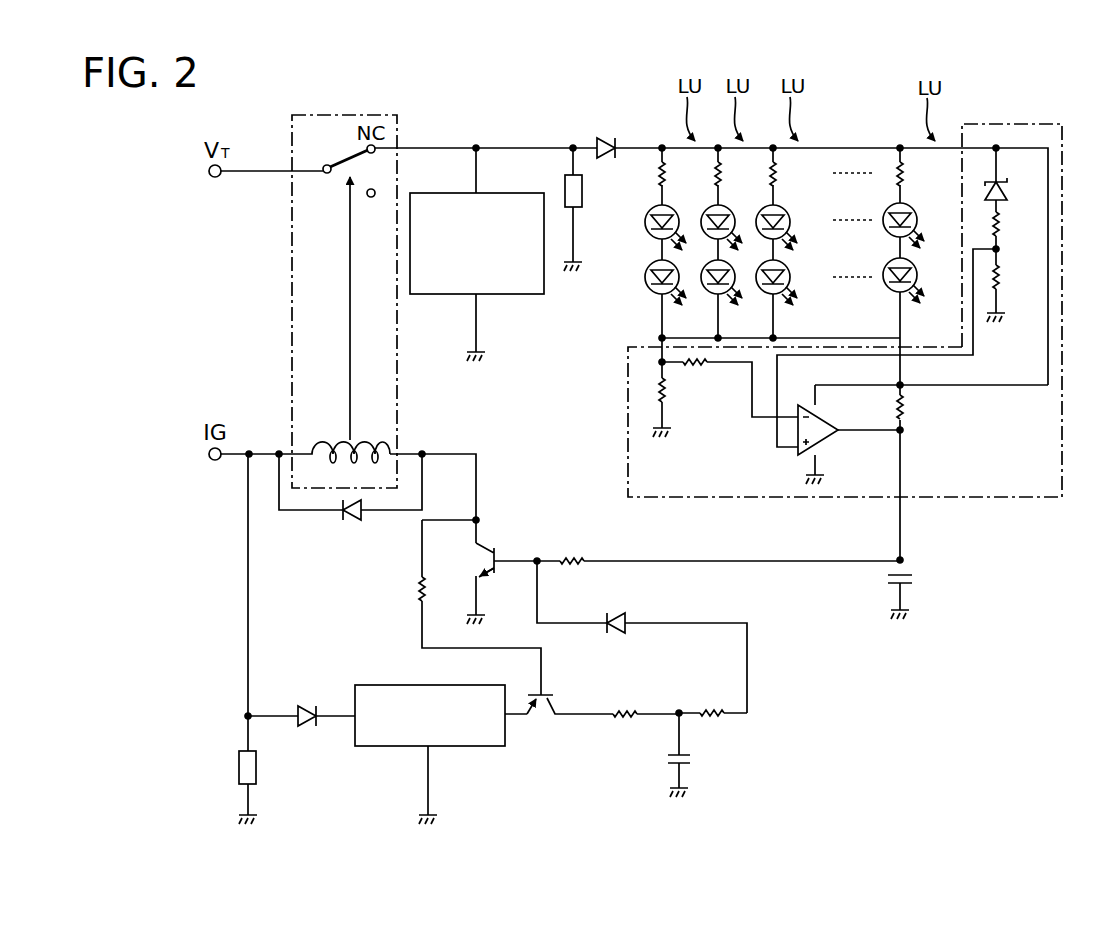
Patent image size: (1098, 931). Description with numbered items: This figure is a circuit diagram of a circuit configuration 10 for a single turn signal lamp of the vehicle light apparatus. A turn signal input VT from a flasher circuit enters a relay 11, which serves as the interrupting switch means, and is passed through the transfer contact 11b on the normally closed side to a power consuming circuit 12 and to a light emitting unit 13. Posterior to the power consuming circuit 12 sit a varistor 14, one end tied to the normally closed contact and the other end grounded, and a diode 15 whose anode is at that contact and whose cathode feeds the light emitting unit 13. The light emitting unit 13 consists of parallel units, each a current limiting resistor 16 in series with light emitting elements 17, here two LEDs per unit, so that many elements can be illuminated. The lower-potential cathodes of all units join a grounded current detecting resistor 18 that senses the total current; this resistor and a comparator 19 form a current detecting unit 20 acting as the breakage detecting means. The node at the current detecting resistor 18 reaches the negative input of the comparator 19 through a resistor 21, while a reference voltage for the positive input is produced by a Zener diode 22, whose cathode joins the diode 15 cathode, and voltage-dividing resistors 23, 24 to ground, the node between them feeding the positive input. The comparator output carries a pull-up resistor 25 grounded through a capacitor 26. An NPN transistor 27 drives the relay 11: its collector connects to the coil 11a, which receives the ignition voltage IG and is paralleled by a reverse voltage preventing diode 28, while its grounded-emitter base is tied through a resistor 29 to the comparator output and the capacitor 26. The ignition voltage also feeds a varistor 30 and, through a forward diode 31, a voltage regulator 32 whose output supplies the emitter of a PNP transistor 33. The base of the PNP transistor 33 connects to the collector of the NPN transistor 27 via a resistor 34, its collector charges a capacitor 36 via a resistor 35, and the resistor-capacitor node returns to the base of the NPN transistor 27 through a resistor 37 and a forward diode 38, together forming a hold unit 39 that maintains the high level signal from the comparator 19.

The circuit configuration 10 is at (845, 80).
The relay 11 is at (330, 113).
The coil 11a is at (330, 440).
The transfer contact 11b is at (335, 176).
The power consuming circuit 12 is at (546, 294).
The light emitting unit 13 is at (882, 130).
The varistor 14 is at (583, 207).
The diode 15 is at (607, 137).
The current limiting resistor 16 is at (657, 178).
The light emitting element 17 is at (650, 240).
The current detecting resistor 18 is at (668, 395).
The comparator 19 is at (827, 440).
The current detecting unit 20 is at (987, 122).
The resistor 21 is at (695, 365).
The Zener diode 22 is at (1007, 188).
The voltage-dividing resistor 23 is at (1002, 227).
The voltage-dividing resistor 24 is at (1002, 280).
The pull-up resistor 25 is at (910, 410).
The capacitor 26 is at (912, 573).
The NPN transistor 27 is at (492, 548).
The reverse voltage preventing diode 28 is at (351, 522).
The resistor 29 is at (570, 557).
The varistor 30 is at (258, 765).
The forward diode 31 is at (309, 704).
The voltage regulator 32 is at (392, 685).
The PNP transistor 33 is at (547, 718).
The resistor 34 is at (415, 585).
The resistor 35 is at (627, 722).
The capacitor 36 is at (690, 753).
The resistor 37 is at (707, 705).
The forward diode 38 is at (615, 612).
The hold unit 39 is at (727, 790).